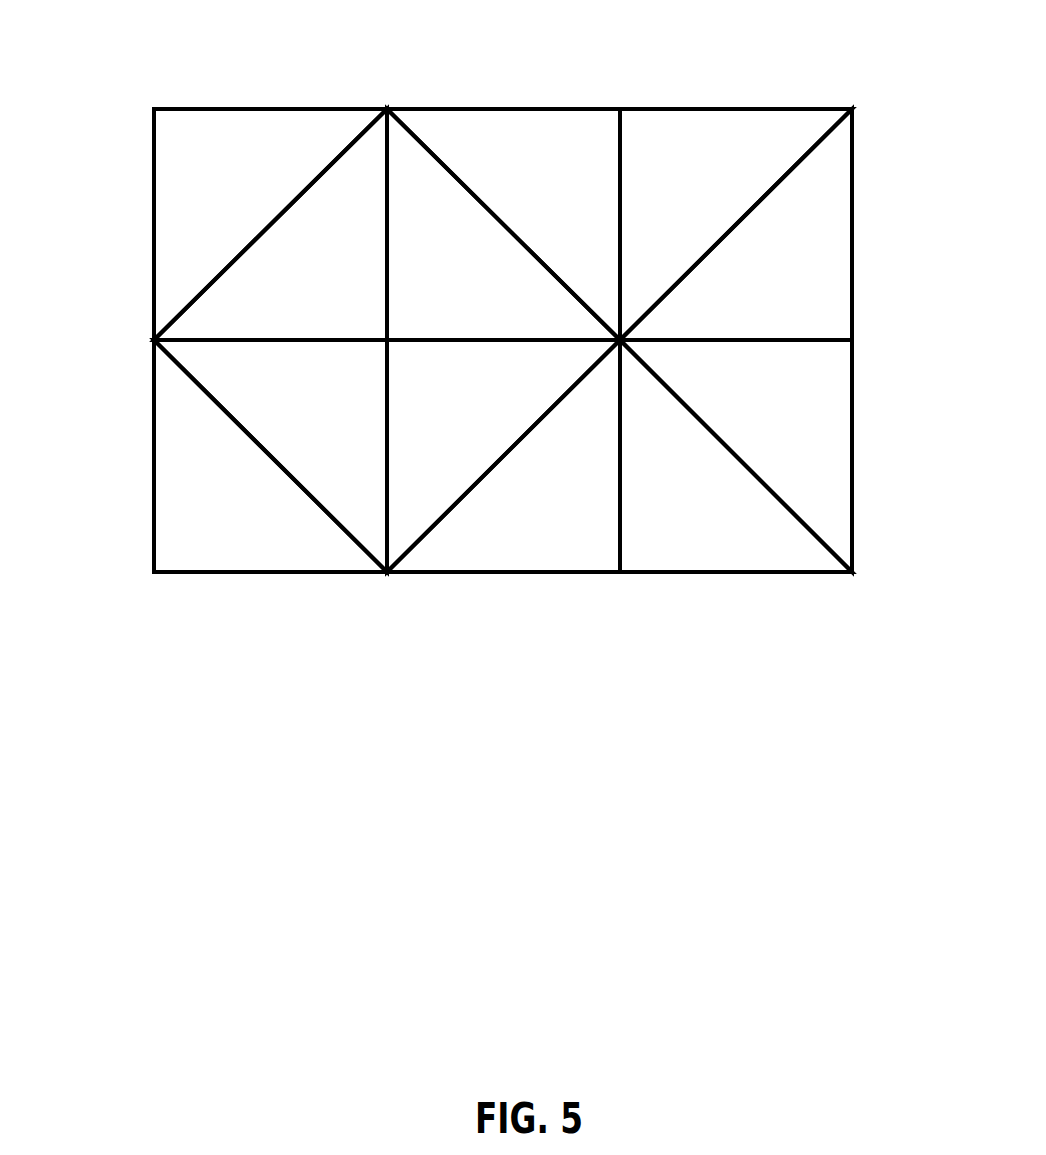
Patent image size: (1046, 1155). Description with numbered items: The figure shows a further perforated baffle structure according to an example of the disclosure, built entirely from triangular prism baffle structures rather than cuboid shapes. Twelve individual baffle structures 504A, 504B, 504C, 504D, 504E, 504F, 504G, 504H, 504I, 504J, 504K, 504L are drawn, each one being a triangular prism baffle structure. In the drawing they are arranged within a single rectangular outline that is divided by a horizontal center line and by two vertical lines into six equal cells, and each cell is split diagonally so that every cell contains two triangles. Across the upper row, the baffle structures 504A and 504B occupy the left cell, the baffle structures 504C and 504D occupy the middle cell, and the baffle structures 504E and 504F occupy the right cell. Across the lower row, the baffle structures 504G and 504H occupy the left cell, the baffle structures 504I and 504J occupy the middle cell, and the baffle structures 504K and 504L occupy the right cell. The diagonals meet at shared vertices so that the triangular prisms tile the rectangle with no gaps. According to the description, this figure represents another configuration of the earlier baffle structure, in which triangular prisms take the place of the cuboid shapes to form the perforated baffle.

The triangular prism baffle structure 504A is at (203, 160).
The triangular prism baffle structure 504B is at (348, 195).
The triangular prism baffle structure 504C is at (420, 178).
The triangular prism baffle structure 504D is at (566, 142).
The triangular prism baffle structure 504E is at (700, 142).
The triangular prism baffle structure 504F is at (818, 196).
The triangular prism baffle structure 504G is at (187, 557).
The triangular prism baffle structure 504H is at (365, 522).
The triangular prism baffle structure 504I is at (437, 485).
The triangular prism baffle structure 504J is at (583, 520).
The triangular prism baffle structure 504K is at (727, 502).
The triangular prism baffle structure 504L is at (818, 449).